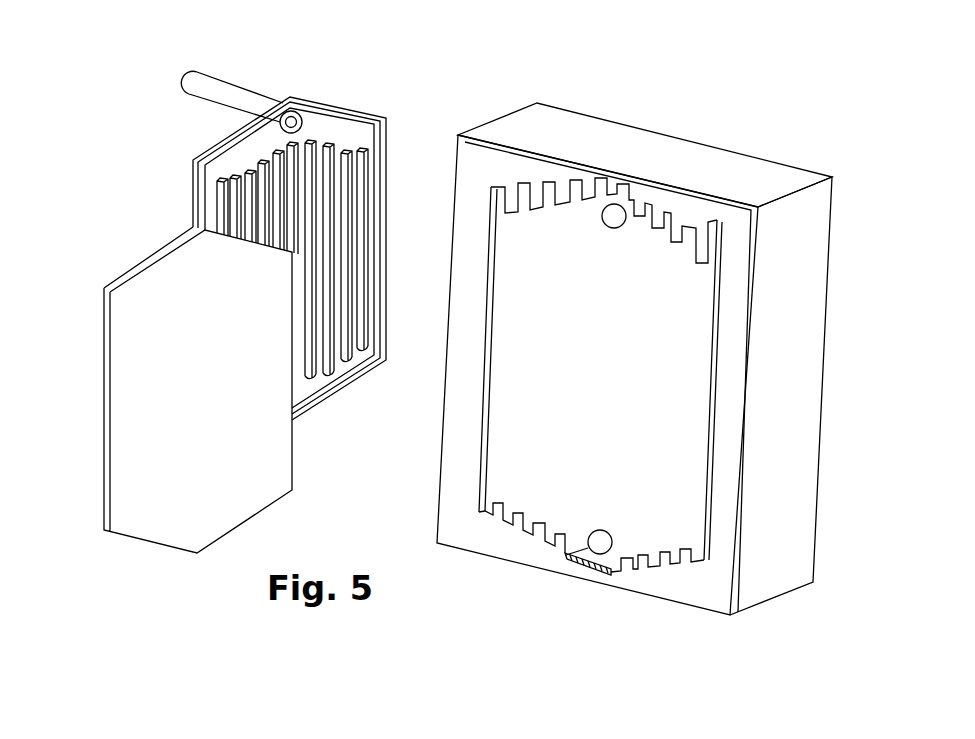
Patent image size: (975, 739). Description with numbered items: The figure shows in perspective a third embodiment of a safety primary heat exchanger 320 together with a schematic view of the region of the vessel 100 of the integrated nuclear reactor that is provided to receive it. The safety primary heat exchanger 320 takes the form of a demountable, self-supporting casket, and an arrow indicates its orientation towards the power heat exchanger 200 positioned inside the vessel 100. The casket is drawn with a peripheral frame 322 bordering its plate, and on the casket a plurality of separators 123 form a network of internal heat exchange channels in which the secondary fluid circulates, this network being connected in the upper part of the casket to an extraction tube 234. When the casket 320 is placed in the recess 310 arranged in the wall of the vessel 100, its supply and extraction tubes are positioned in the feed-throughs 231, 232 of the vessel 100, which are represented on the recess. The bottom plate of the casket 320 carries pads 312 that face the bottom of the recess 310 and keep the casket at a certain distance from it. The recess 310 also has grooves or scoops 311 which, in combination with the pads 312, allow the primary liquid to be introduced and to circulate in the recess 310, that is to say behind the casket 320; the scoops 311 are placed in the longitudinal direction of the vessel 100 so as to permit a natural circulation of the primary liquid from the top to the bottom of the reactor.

The vessel 100 is at (812, 583).
The recess 310 is at (520, 477).
The grooves or scoops 311 is at (694, 204).
The pads 312 is at (657, 205).
The feed-through 231 is at (566, 558).
The feed-through 232 is at (605, 207).
The safety primary heat exchanger 320 is at (258, 82).
The frame of cover 322 is at (199, 137).
The separators 123 is at (337, 146).
The extraction tube 234 is at (210, 80).
The power heat exchanger 200 is at (212, 128).